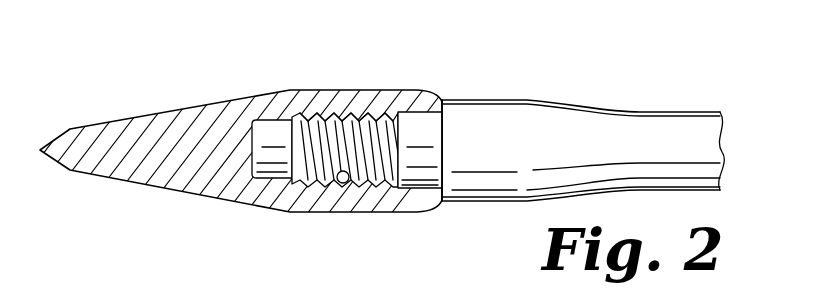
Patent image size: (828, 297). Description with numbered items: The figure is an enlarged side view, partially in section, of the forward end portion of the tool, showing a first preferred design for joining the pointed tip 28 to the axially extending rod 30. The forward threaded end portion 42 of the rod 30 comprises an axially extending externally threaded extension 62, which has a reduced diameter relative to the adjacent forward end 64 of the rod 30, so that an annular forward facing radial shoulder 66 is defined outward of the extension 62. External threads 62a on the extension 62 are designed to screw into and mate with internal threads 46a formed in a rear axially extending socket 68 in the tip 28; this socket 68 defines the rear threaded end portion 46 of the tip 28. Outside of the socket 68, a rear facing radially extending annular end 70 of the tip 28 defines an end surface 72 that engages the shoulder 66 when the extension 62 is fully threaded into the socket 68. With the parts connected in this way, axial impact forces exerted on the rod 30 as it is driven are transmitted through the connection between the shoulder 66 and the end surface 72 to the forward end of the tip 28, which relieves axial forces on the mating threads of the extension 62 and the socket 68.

The tip 28 is at (152, 112).
The rod 30 is at (692, 105).
The forward threaded end portion 42 is at (310, 183).
The rear threaded end portion 46 is at (372, 107).
The internal threads 46a is at (348, 182).
The externally threaded extension 62 is at (330, 115).
The external threads 62a is at (325, 113).
The forward end 64 is at (583, 149).
The shoulder 66 is at (437, 98).
The socket 68 is at (445, 168).
The annular end 70 is at (448, 203).
The end surface 72 is at (444, 104).